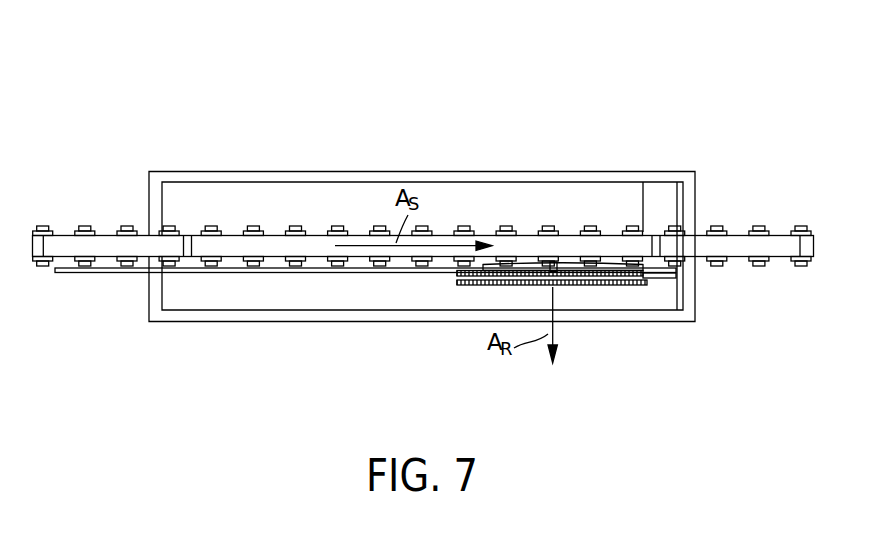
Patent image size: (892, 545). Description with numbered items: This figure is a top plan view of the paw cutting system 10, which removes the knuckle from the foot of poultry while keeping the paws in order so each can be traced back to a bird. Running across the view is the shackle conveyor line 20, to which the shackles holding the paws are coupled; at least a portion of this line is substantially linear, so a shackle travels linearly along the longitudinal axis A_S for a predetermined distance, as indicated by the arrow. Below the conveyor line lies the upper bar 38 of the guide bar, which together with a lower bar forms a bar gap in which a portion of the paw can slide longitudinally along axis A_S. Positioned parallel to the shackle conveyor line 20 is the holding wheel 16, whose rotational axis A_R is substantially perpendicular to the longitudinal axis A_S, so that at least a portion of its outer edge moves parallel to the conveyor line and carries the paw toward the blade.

The paw cutting system 10 is at (696, 86).
The shackle conveyor line 20 is at (732, 245).
The upper bar 38 is at (273, 273).
The holding wheel 16 is at (577, 287).